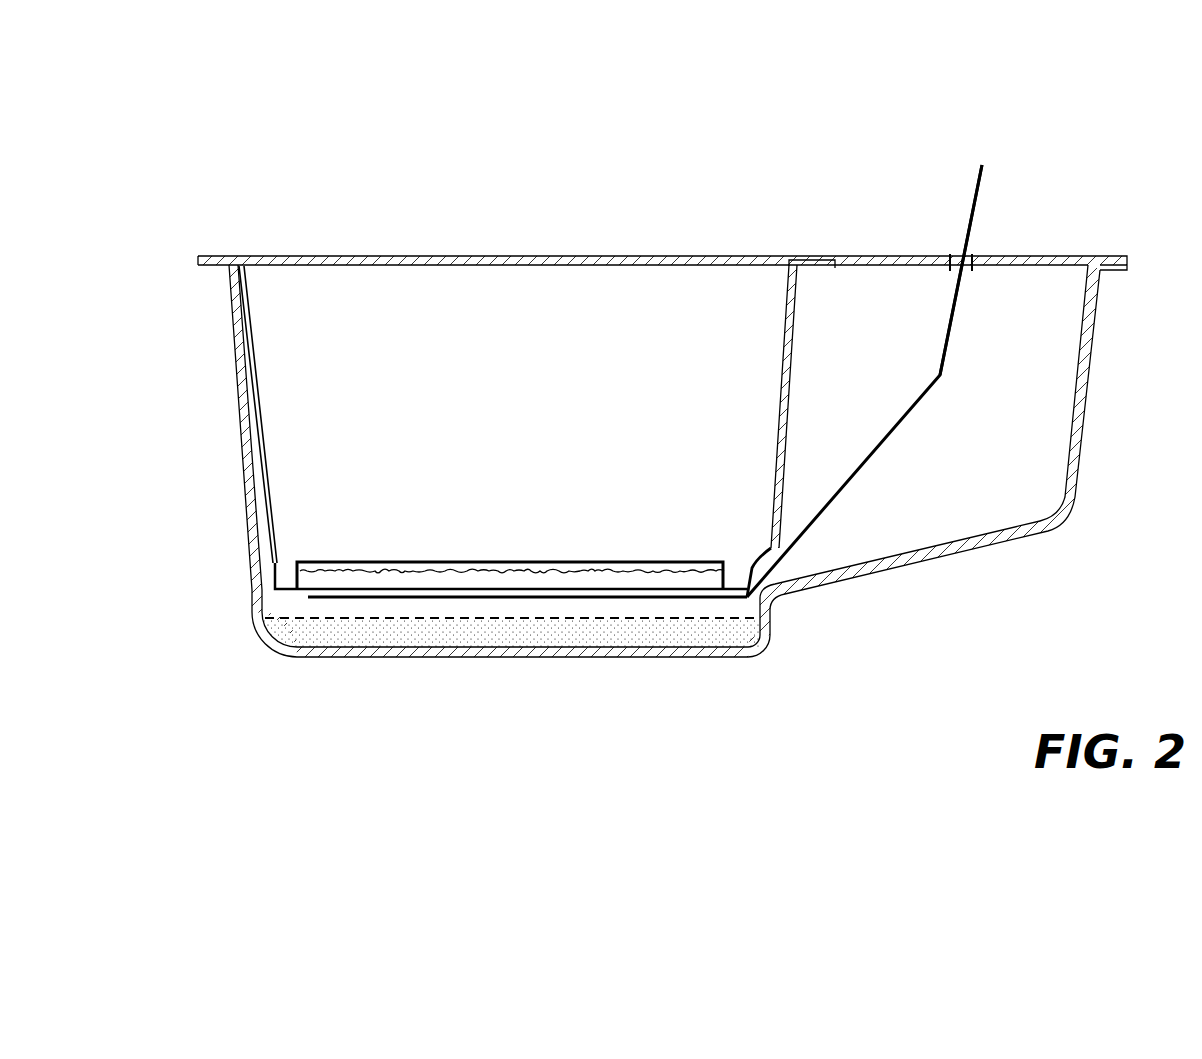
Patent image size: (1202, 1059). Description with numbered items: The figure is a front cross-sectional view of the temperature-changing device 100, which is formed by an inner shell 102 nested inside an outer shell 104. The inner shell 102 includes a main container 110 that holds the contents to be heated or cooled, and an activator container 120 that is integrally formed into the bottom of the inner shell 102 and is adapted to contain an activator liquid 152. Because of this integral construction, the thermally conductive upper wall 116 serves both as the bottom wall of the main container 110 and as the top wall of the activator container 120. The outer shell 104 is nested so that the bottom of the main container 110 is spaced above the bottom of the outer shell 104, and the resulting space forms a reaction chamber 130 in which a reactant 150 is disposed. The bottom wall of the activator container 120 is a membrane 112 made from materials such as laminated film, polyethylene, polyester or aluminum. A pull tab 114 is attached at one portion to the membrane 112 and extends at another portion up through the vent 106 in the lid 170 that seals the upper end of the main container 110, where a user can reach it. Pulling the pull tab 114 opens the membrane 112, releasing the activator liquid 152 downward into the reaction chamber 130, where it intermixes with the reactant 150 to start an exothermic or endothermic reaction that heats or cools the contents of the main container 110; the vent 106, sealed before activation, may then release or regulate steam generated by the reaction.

The temperature-changing device 100 is at (160, 119).
The inner shell 102 is at (262, 417).
The outer shell 104 is at (234, 362).
The vent 106 is at (955, 262).
The main container 110 is at (498, 368).
The membrane 112 is at (300, 598).
The pull tab 114 is at (975, 195).
The thermally conductive upper wall 116 is at (585, 561).
The activator container 120 is at (347, 558).
The reaction chamber 130 is at (303, 612).
The reactant 150 is at (690, 633).
The activator liquid 152 is at (555, 582).
The lid 170 is at (573, 257).